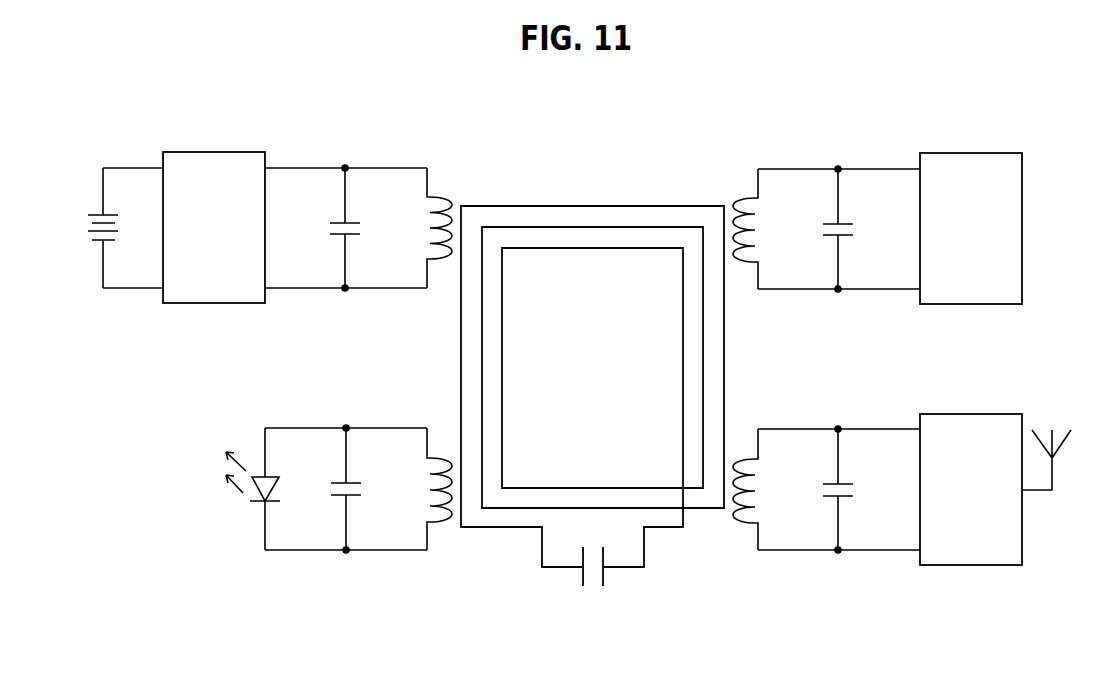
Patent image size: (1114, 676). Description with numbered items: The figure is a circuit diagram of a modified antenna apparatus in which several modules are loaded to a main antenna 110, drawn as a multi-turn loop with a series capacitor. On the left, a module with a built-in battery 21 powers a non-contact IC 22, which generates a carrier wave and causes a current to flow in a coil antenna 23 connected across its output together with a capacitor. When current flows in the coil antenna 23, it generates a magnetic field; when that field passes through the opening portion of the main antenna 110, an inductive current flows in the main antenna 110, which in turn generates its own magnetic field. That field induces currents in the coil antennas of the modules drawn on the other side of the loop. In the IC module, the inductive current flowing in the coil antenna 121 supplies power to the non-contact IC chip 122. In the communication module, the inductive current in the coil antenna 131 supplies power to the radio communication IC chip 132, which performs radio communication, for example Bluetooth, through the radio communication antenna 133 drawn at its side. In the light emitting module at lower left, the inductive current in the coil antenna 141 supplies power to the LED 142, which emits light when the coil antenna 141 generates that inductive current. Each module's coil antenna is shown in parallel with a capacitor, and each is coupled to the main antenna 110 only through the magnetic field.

The battery 21 is at (130, 166).
The non-contact IC 22 is at (213, 151).
The coil antenna 23 is at (378, 166).
The main antenna 110 is at (591, 205).
The coil antenna 121 is at (803, 167).
The non-contact IC chip 122 is at (967, 152).
The coil antenna 131 is at (803, 427).
The radio communication IC chip 132 is at (967, 413).
The radio communication antenna 133 is at (1060, 430).
The coil antenna 141 is at (381, 427).
The LED 142 is at (250, 502).